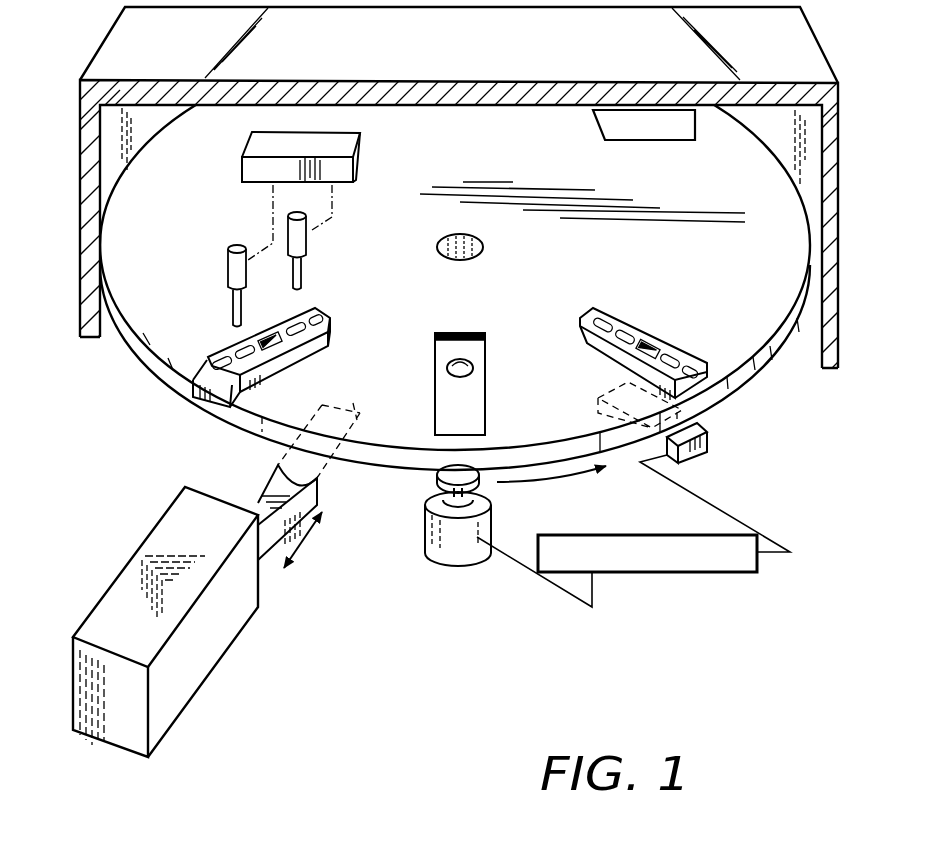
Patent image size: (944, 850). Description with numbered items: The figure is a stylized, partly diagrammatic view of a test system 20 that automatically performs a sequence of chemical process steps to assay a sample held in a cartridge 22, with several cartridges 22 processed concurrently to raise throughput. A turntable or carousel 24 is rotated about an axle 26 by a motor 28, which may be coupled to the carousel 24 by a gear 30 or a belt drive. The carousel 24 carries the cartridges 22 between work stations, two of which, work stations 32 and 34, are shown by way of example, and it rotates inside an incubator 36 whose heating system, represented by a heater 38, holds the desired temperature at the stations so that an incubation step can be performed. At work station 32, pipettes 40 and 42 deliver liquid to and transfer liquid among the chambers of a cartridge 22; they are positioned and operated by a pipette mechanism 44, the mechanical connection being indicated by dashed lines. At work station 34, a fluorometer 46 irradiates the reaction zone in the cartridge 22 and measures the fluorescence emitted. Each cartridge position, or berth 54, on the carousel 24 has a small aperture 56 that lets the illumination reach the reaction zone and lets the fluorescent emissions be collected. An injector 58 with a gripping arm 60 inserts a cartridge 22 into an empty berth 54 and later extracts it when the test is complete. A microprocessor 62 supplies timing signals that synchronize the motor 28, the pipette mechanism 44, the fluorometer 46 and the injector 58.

The test system 20 is at (104, 343).
The cartridge 22 is at (293, 352).
The carousel 24 is at (150, 354).
The axle 26 is at (483, 246).
The motor 28 is at (424, 532).
The gear 30 is at (437, 476).
The work station 32 is at (150, 395).
The work station 34 is at (724, 468).
The incubator 36 is at (443, 108).
The heater 38 is at (680, 142).
The pipette 40 is at (229, 270).
The pipette 42 is at (307, 233).
The pipette mechanism 44 is at (360, 153).
The fluorometer 46 is at (707, 442).
The berth 54 is at (260, 375).
The aperture 56 is at (450, 368).
The injector 58 is at (185, 682).
The arm 60 is at (263, 573).
The microprocessor 62 is at (648, 572).